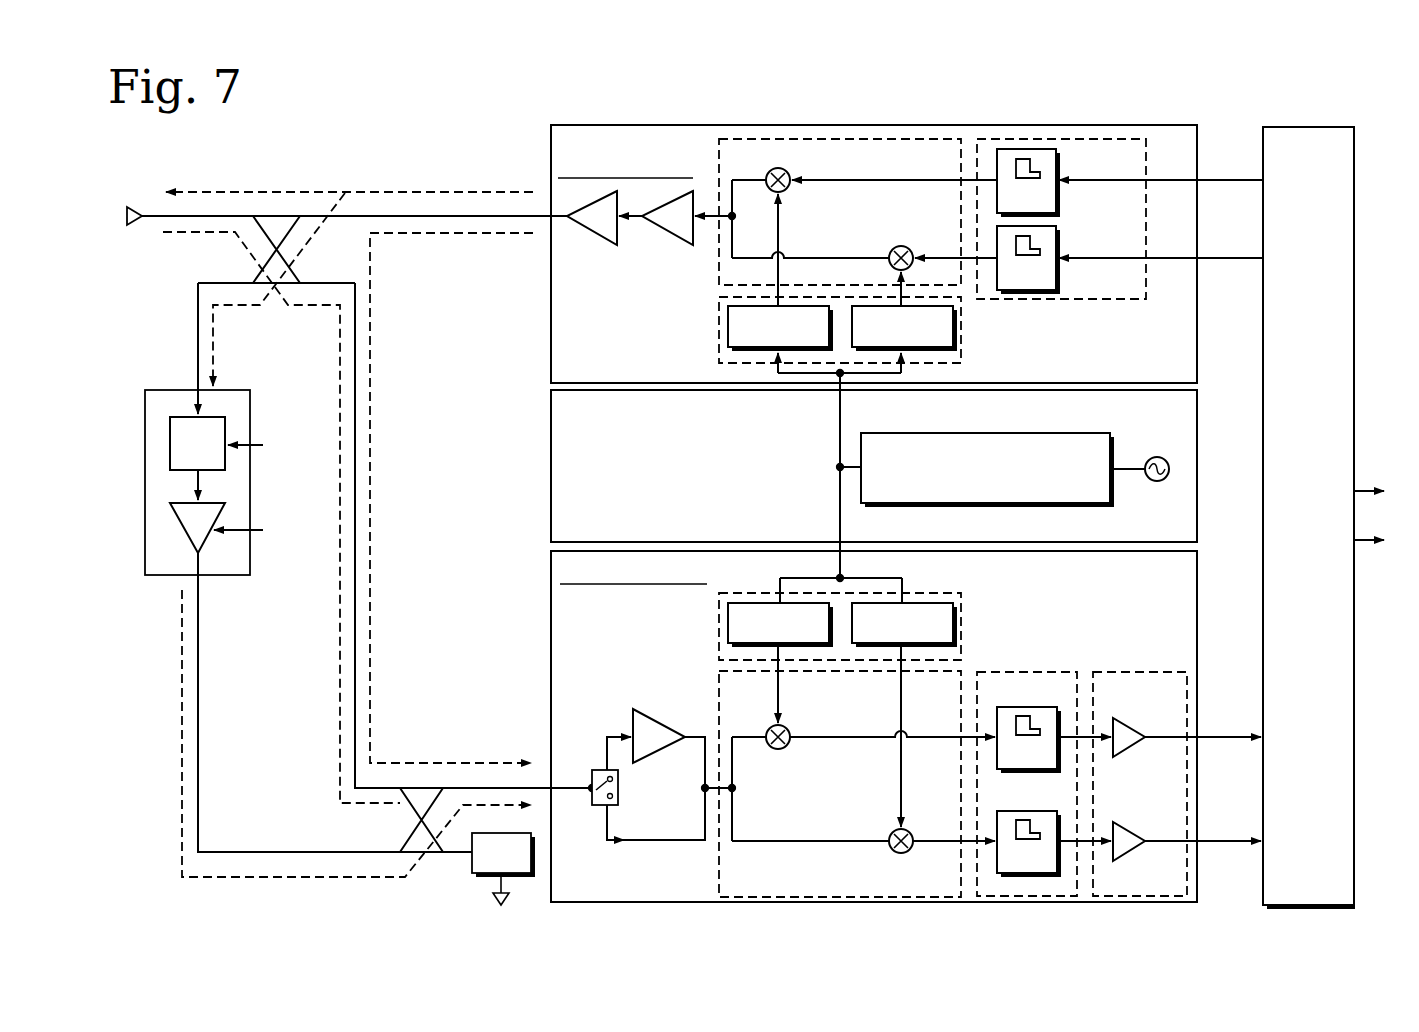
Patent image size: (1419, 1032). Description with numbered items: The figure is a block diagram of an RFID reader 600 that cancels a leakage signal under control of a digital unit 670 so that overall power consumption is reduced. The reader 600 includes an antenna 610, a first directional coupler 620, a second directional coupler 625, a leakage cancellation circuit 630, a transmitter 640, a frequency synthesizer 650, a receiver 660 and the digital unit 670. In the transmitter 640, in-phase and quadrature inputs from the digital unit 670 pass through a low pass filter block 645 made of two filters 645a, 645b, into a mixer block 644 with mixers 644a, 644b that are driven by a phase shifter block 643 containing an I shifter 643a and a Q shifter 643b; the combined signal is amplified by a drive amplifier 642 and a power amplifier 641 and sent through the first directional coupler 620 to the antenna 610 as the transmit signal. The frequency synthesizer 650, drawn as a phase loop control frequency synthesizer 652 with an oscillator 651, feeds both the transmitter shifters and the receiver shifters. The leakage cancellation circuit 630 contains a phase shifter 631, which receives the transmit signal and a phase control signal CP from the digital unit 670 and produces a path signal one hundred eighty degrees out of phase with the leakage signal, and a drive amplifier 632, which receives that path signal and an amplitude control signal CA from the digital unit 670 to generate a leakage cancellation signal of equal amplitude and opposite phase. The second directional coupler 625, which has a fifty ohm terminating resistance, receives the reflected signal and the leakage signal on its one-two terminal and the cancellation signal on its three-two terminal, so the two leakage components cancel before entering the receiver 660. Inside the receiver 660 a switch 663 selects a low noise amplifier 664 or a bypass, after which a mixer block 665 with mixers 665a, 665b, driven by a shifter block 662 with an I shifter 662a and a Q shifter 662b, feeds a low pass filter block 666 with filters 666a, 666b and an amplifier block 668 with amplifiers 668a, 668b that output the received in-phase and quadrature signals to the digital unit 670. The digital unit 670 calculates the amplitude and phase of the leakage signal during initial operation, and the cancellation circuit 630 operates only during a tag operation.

The RFID reader 600 is at (491, 103).
The antenna 610 is at (136, 207).
The first directional coupler 620 is at (279, 212).
The second directional coupler 625 is at (421, 784).
The leakage cancellation circuit 630 is at (226, 429).
The phase shifter 631 is at (222, 418).
The drive amplifier 632 is at (222, 504).
The transmitter 640 is at (907, 230).
The power amplifier 641 is at (590, 236).
The driver amplifier 642 is at (667, 236).
The phase shifter unit 643 is at (844, 335).
The I shifter 643a is at (728, 326).
The Q shifter 643b is at (954, 326).
The mixer unit 644 is at (841, 181).
The I mixer 644a is at (789, 171).
The Q mixer 644b is at (892, 250).
The low pass filter unit 645 is at (1063, 188).
The I low pass filter 645a is at (1058, 197).
The Q low pass filter 645b is at (1058, 275).
The frequency synthesizer 650 is at (593, 424).
The oscillator 651 is at (1160, 457).
The phase loop control frequency synthesizer 652 is at (1078, 433).
The receiver 660 is at (906, 726).
The phase shifter unit 662 is at (843, 612).
The I shifter 662a is at (728, 623).
The Q shifter 662b is at (954, 623).
The bypass switch 663 is at (597, 770).
The low noise amplifier 664 is at (662, 757).
The mixer unit 665 is at (804, 784).
The I mixer 665a is at (788, 728).
The Q mixer 665b is at (892, 832).
The low pass filter unit 666 is at (1037, 756).
The I low pass filter 666a is at (1010, 707).
The Q low pass filter 666b is at (1010, 811).
The amplifier unit 668 is at (1141, 756).
The I amplifier 668a is at (1142, 713).
The Q amplifier 668b is at (1142, 817).
The digital unit 670 is at (1324, 127).